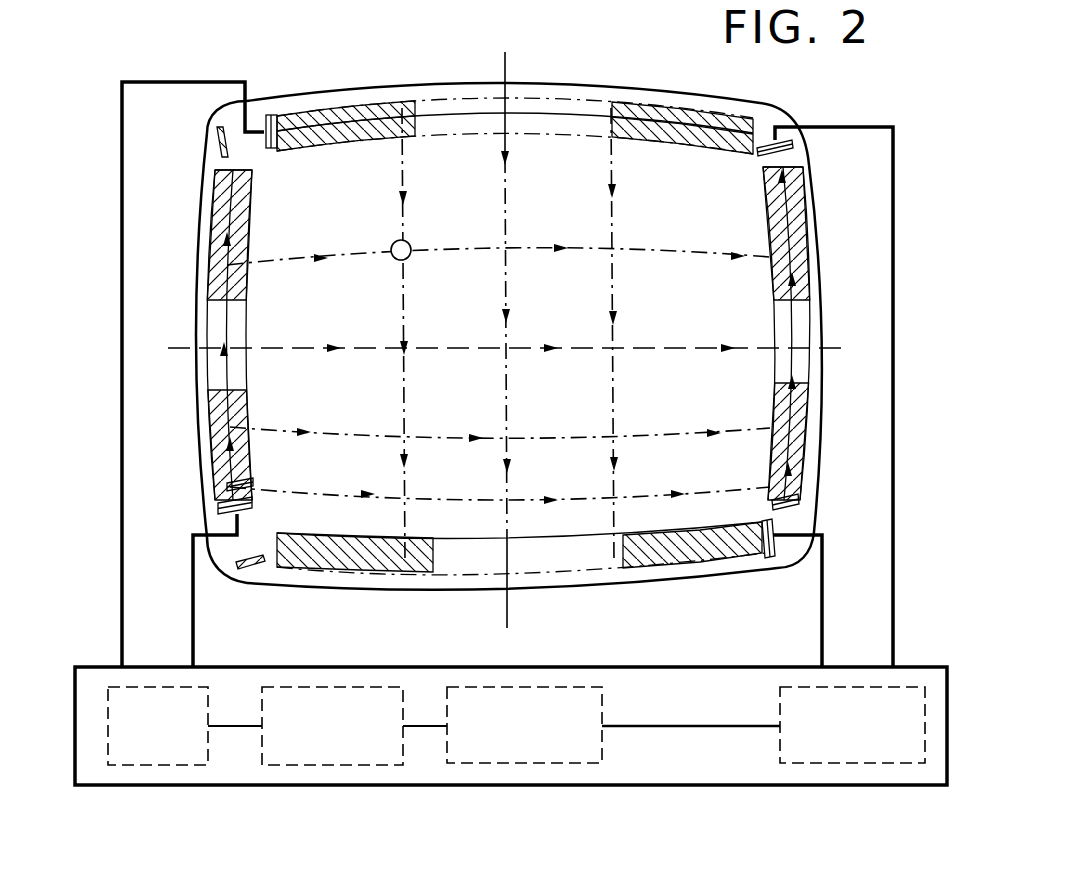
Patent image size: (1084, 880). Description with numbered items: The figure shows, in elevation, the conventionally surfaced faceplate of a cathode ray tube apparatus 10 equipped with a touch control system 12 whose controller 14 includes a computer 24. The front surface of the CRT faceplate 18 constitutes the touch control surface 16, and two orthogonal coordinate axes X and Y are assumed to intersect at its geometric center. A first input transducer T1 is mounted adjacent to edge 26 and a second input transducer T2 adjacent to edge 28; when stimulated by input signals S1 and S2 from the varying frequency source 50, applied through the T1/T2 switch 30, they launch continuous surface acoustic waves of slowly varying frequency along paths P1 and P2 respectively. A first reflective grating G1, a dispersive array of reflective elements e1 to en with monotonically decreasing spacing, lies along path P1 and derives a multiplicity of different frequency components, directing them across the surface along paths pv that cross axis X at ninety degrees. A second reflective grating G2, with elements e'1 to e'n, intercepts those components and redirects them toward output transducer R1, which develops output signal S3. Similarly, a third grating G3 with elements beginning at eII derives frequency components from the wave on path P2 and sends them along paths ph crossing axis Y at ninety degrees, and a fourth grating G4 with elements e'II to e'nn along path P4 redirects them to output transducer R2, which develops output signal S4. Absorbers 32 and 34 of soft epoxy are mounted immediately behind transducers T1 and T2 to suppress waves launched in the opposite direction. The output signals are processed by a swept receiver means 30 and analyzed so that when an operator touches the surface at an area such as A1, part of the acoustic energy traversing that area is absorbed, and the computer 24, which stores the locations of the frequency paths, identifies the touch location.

The cathode ray tube apparatus 10 is at (513, 306).
The touch control system 12 is at (512, 374).
The controller 14 is at (480, 783).
The touch control surface 16 is at (787, 333).
The CRT faceplate 18 is at (797, 125).
The computer 24 is at (603, 746).
The edge 26 is at (408, 90).
The edge 28 is at (200, 455).
The T1/T2 switch 30 is at (155, 767).
The absorber 32 is at (217, 137).
The absorber 34 is at (248, 582).
The varying frequency source 50 is at (313, 766).
The input transducer T1 is at (284, 121).
The input transducer T2 is at (212, 515).
The output transducer R1 is at (788, 569).
The output transducer R2 is at (805, 138).
The first path P1 is at (515, 111).
The second path P2 is at (224, 335).
The fourth path P4 is at (785, 333).
The first reflective grating G1 is at (384, 140).
The second reflective grating G2 is at (526, 537).
The third reflective grating G3 is at (247, 293).
The fourth reflective grating G4 is at (768, 284).
The touch area A1 is at (410, 241).
The input signal S1 is at (120, 623).
The input signal S2 is at (192, 642).
The output signal S3 is at (820, 640).
The output signal S4 is at (895, 640).
The wave reflective element e1 is at (287, 144).
The wave reflective element en is at (744, 153).
The reflective element e'1 is at (355, 536).
The reflective element e'n is at (735, 529).
The reflective element e'nn is at (732, 194).
The reflective element eII is at (256, 483).
The reflective element e'II is at (758, 480).
The horizontal wave path ph is at (680, 256).
The vertical wave path pv is at (507, 293).
The X coordinate axis X is at (506, 349).
The Y coordinate axis Y is at (505, 337).